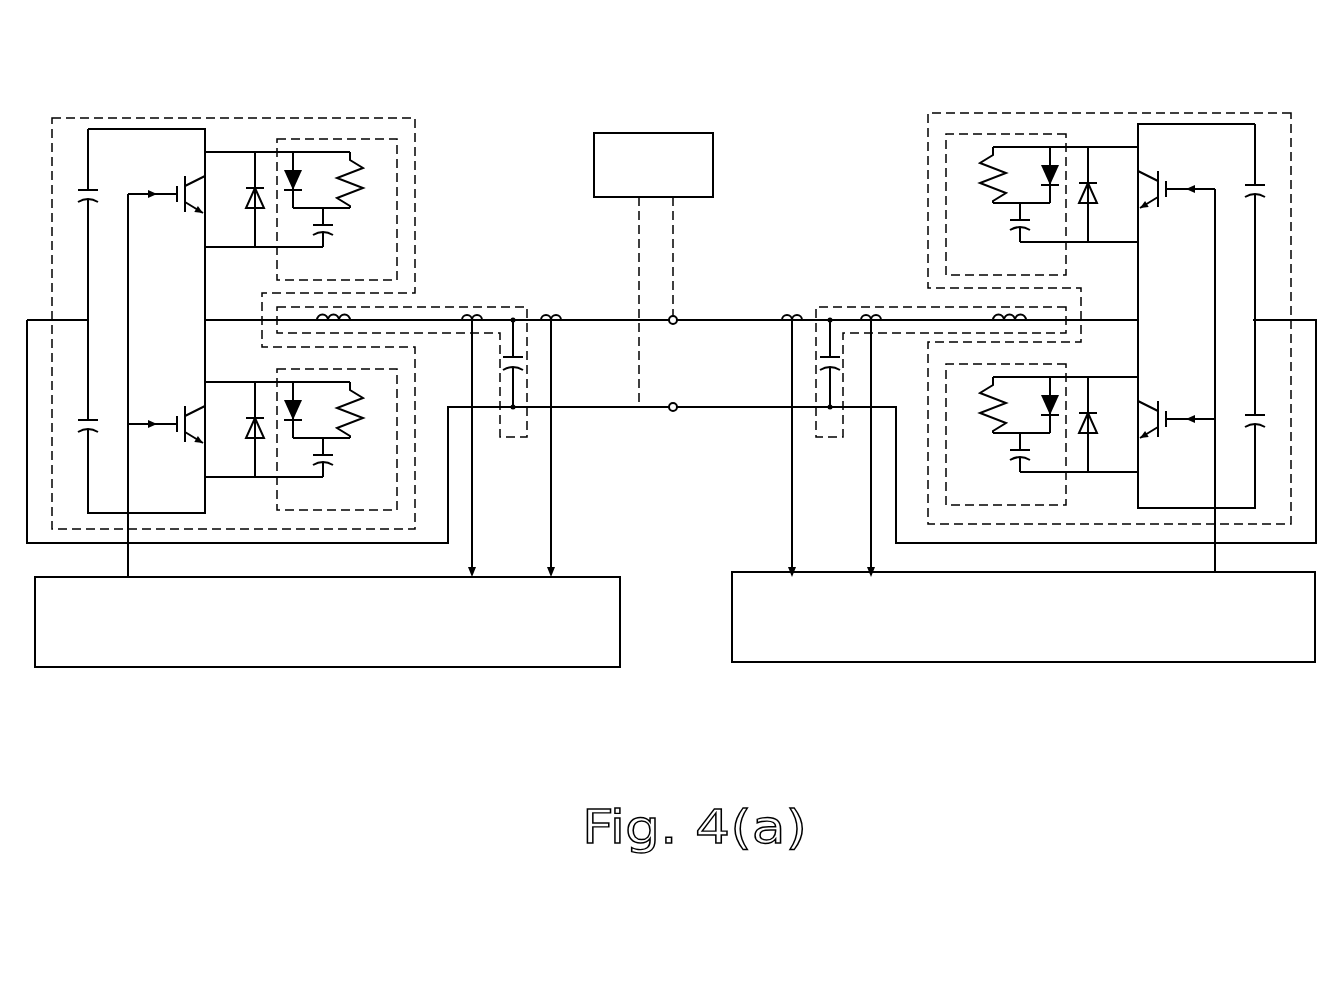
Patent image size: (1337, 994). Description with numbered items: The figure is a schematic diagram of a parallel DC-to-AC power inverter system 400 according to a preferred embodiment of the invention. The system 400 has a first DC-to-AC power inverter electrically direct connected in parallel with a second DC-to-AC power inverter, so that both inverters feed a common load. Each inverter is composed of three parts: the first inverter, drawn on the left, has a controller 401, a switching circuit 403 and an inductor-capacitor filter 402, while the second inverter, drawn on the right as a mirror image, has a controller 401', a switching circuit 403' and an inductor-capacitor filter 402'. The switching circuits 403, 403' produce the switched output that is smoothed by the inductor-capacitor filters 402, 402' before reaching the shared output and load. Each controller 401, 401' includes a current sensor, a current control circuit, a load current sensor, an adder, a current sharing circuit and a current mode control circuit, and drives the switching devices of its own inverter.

The parallel DC-to-AC power inverter system 400 is at (1225, 95).
The controller 401 is at (327, 657).
The controller 401' is at (1023, 651).
The inductor-capacitor filter 402 is at (430, 409).
The inductor-capacitor filter 402' is at (914, 409).
The switching circuit 403 is at (271, 347).
The switching circuit 403' is at (1073, 342).